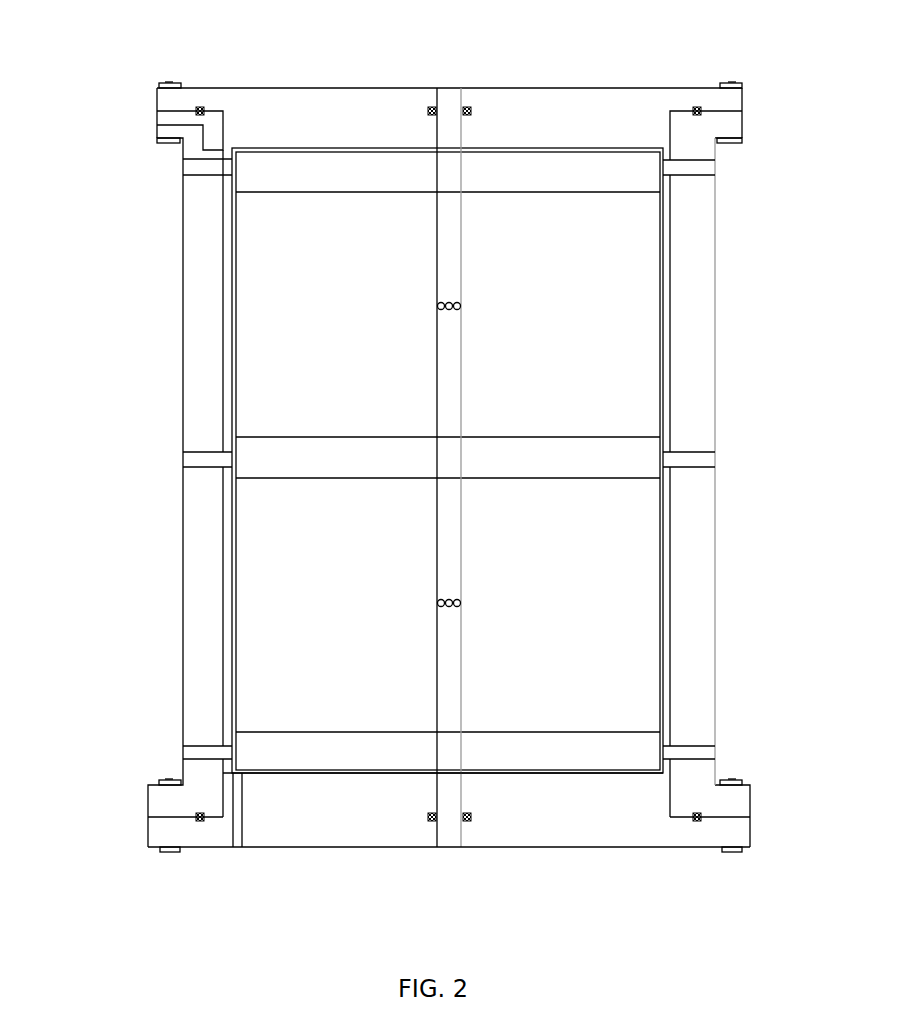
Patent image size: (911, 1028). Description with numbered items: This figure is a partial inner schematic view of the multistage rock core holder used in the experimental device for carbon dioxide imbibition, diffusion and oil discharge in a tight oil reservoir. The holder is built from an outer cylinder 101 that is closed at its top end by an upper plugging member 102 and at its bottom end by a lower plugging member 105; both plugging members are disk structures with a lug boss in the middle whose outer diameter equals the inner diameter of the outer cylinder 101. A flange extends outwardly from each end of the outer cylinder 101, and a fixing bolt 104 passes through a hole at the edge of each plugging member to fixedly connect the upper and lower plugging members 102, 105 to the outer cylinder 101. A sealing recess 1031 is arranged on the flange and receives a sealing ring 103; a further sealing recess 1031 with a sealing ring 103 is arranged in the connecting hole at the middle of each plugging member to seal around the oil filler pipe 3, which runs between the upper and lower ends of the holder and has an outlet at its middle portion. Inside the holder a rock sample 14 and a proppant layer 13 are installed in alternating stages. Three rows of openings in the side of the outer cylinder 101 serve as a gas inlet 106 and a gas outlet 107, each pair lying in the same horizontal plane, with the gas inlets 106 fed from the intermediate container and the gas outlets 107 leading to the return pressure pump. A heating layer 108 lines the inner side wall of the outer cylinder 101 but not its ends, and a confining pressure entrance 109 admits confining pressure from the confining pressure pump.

The oil filler pipe 3 is at (457, 96).
The proppant layer 13 is at (573, 177).
The rock sample 14 is at (608, 275).
The outer cylinder 101 is at (208, 308).
The upper plugging member 102 is at (325, 105).
The sealing ring 103 is at (206, 108).
The sealing recess 1031 is at (197, 110).
The fixing bolt 104 is at (180, 82).
The lower plugging member 105 is at (312, 808).
The gas inlet 106 is at (202, 168).
The gas outlet 107 is at (700, 170).
The heating layer 108 is at (233, 387).
The confining pressure entrance 109 is at (237, 830).